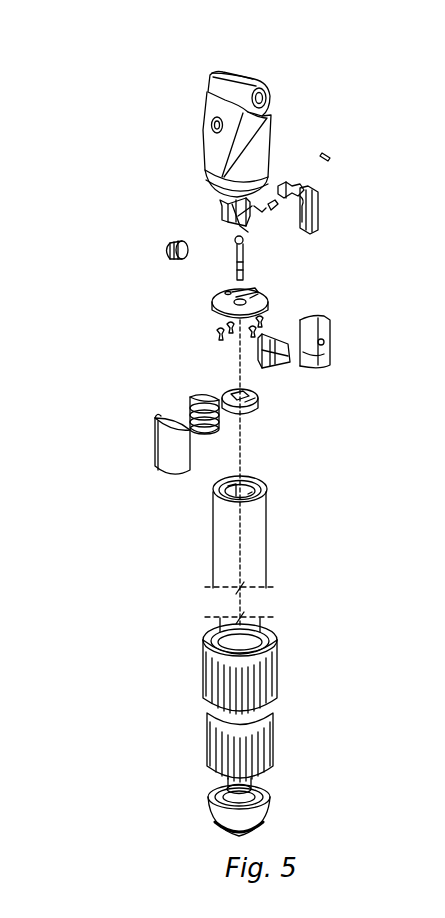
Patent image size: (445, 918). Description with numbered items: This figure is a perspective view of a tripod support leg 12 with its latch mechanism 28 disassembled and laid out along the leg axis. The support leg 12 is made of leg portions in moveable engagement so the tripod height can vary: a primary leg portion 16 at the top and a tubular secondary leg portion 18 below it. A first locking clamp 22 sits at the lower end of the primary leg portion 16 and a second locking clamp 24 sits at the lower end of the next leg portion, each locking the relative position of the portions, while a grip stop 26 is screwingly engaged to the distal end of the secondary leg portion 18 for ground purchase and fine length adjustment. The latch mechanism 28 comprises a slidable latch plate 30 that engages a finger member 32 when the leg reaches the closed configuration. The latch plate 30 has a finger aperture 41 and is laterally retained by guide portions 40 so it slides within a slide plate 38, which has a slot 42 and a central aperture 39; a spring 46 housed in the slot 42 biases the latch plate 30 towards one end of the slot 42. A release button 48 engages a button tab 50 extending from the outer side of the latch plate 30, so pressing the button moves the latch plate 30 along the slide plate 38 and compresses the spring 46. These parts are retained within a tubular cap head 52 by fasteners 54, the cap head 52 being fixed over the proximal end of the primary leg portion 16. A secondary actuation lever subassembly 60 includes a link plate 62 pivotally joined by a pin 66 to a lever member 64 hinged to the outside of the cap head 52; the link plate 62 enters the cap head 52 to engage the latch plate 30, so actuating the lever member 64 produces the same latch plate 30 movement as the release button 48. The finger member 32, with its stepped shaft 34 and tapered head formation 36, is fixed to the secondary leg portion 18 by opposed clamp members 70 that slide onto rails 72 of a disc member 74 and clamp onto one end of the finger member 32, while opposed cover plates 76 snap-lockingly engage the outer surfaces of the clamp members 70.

The support leg 12 is at (88, 412).
The primary leg portion 16 is at (256, 550).
The secondary leg portion 18 is at (264, 484).
The first locking clamp 22 is at (278, 676).
The second locking clamp 24 is at (274, 750).
The grip stop 26 is at (272, 812).
The latch mechanism 28 is at (380, 258).
The latch plate 30 is at (232, 206).
The finger member 32 is at (237, 254).
The stepped shaft 34 is at (244, 257).
The tapered head formation 36 is at (235, 238).
The slide plate 38 is at (212, 301).
The central aperture 39 is at (262, 305).
The guide portions 40 is at (230, 320).
The finger aperture 41 is at (258, 210).
The slot 42 is at (254, 300).
The spring 46 is at (273, 208).
The release button 48 is at (166, 248).
The button tab 50 is at (222, 214).
The cap head 52 is at (262, 136).
The fasteners 54 is at (252, 332).
The secondary actuation lever subassembly 60 is at (380, 135).
The link plate 62 is at (292, 182).
The lever member 64 is at (318, 200).
The pin 66 is at (330, 154).
The clamp members 70 is at (285, 360).
The rails 72 is at (238, 392).
The disc member 74 is at (248, 408).
The cover plates 76 is at (322, 348).